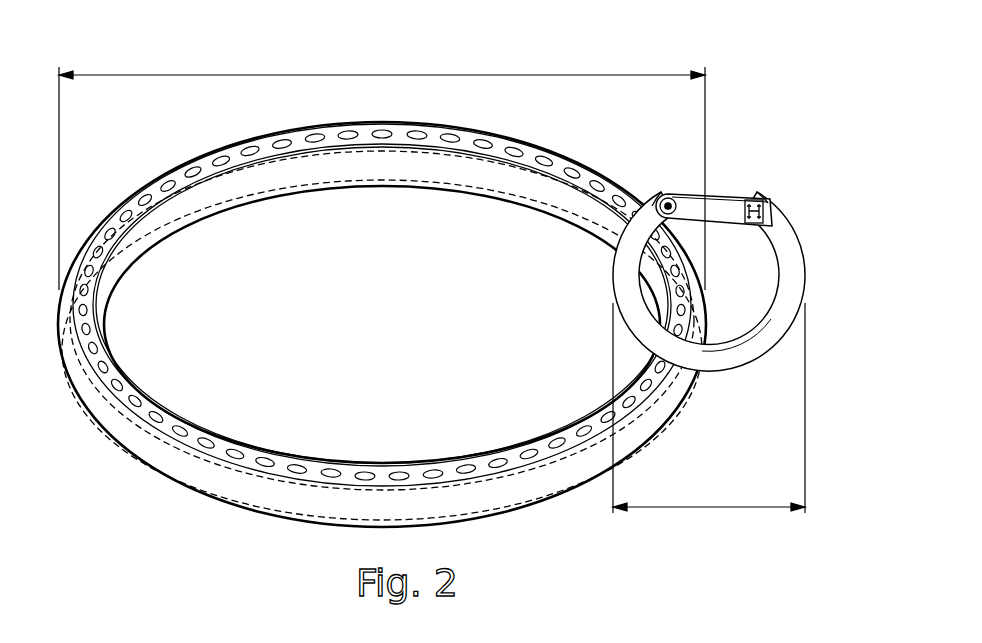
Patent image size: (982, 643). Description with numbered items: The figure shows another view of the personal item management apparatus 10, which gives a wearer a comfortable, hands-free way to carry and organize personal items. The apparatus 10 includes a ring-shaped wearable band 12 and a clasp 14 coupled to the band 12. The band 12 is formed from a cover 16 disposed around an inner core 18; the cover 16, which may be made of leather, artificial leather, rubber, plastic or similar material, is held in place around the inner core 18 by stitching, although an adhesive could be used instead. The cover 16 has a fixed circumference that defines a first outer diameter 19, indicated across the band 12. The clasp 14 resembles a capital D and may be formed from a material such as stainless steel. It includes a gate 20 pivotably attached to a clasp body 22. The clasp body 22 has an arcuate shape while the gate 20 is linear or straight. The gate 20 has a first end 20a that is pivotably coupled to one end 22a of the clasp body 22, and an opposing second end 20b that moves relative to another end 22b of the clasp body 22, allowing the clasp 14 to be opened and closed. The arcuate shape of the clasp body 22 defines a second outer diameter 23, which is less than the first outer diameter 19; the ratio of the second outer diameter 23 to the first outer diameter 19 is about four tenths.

The personal item management apparatus 10 is at (382, 331).
The wearable band 12 is at (215, 501).
The clasp 14 is at (721, 270).
The cover 16 is at (513, 500).
The inner core 18 is at (162, 474).
The first outer diameter 19 is at (383, 73).
The gate 20 is at (718, 171).
The first end of gate 20a is at (682, 190).
The second end of gate 20b is at (752, 196).
The clasp body 22 is at (735, 368).
The one end of clasp body 22a is at (641, 200).
The another end of clasp body 22b is at (776, 208).
The second outer diameter 23 is at (707, 508).